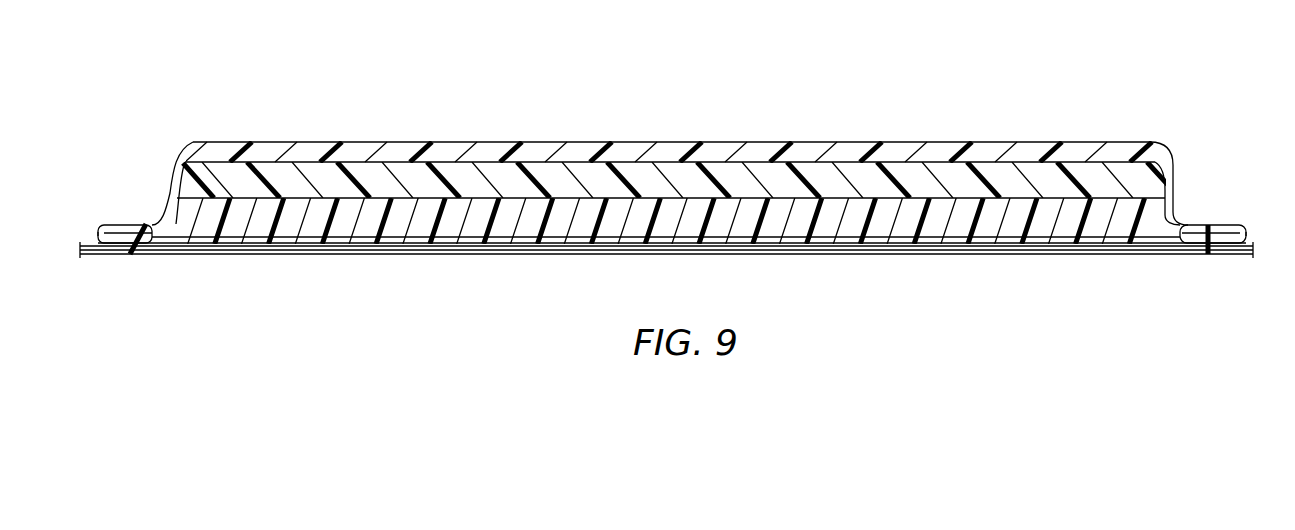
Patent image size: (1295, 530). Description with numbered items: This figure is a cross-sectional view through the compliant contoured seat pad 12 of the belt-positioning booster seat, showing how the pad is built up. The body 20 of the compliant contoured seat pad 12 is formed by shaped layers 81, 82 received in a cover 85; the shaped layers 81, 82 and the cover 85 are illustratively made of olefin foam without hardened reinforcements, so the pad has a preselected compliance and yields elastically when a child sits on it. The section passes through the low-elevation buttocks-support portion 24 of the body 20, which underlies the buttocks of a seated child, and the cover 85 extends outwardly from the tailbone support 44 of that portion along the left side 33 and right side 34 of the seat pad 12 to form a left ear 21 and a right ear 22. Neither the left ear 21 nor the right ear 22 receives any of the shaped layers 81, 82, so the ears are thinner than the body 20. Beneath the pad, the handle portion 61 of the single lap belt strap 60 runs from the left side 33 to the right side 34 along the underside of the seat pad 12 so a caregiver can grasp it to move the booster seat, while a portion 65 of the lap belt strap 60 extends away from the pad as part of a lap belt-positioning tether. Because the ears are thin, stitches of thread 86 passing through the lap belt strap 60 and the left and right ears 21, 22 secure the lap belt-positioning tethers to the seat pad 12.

The compliant contoured seat pad 12 is at (942, 102).
The body 20 is at (590, 133).
The left ear 21 is at (118, 222).
The right ear 22 is at (1228, 224).
The low-elevation buttocks-support portion 24 is at (677, 140).
The left side 33 is at (96, 226).
The right side 34 is at (1250, 224).
The tailbone support 44 is at (725, 142).
The lap belt strap 60 is at (813, 258).
The handle portion 61 is at (770, 259).
The portion of lap belt strap 65 is at (112, 257).
The shaped layer 81 is at (1153, 210).
The shaped layer 82 is at (1137, 173).
The cover 85 is at (1097, 143).
The stitches of thread 86 is at (170, 214).